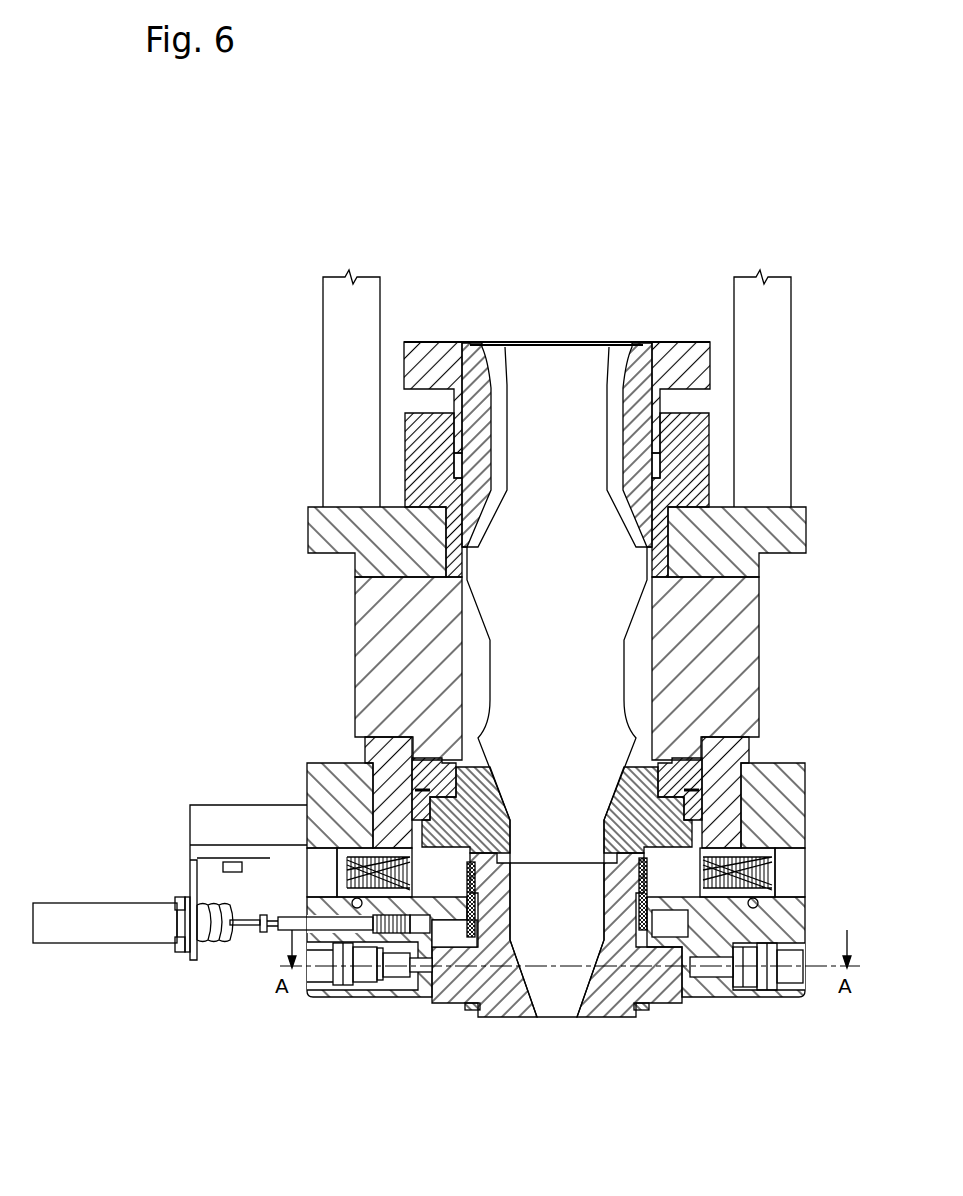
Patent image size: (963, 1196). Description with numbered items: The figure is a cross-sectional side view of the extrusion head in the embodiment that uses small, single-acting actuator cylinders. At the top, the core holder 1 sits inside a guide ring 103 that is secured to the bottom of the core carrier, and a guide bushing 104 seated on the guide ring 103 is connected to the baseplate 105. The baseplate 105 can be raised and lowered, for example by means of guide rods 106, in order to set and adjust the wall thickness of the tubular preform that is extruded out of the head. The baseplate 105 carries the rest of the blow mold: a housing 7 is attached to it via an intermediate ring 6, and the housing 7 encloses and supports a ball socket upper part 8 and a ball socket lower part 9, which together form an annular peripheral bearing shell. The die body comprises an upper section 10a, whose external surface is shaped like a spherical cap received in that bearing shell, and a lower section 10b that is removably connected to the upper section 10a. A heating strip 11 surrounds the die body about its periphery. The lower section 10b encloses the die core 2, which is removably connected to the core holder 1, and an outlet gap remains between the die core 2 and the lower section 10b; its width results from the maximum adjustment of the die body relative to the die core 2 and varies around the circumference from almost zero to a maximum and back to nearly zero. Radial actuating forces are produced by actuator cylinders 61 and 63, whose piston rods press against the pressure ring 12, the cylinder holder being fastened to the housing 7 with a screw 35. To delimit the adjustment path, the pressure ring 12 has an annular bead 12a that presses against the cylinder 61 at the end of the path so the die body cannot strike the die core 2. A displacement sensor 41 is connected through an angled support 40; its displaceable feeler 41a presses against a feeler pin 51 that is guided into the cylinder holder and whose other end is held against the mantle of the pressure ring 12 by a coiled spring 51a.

The core holder 1 is at (578, 478).
The die core 2 is at (560, 998).
The intermediate ring 6 is at (718, 642).
The housing 7 is at (403, 750).
The ball socket upper part 8 is at (433, 773).
The ball socket lower part 9 is at (700, 790).
The die body upper section 10a is at (412, 815).
The die body lower section 10b is at (625, 930).
The heating strip 11 is at (650, 857).
The pressure ring 12 is at (452, 1003).
The annular bead 12a is at (690, 997).
The screw 35 is at (790, 877).
The angled support 40 is at (195, 880).
The displacement sensor 41 is at (93, 930).
The displaceable feeler 41a is at (235, 935).
The feeler pin 51 is at (280, 940).
The coiled spring 51a is at (350, 985).
The actuator cylinder 61 is at (390, 996).
The actuator cylinder 63 is at (730, 997).
The guide ring 103 is at (683, 365).
The guide bushing 104 is at (420, 437).
The baseplate 105 is at (348, 525).
The guide rods 106 is at (348, 312).